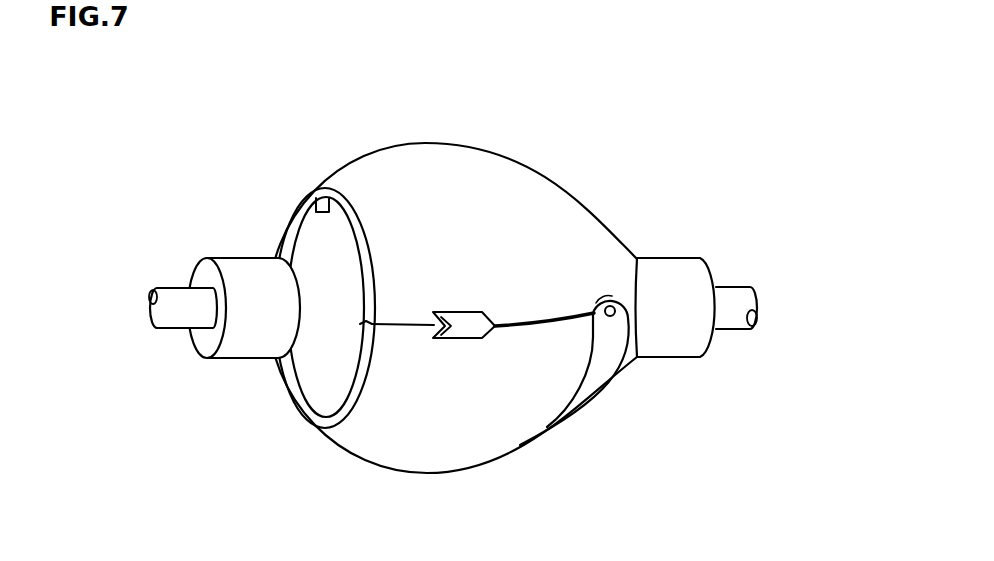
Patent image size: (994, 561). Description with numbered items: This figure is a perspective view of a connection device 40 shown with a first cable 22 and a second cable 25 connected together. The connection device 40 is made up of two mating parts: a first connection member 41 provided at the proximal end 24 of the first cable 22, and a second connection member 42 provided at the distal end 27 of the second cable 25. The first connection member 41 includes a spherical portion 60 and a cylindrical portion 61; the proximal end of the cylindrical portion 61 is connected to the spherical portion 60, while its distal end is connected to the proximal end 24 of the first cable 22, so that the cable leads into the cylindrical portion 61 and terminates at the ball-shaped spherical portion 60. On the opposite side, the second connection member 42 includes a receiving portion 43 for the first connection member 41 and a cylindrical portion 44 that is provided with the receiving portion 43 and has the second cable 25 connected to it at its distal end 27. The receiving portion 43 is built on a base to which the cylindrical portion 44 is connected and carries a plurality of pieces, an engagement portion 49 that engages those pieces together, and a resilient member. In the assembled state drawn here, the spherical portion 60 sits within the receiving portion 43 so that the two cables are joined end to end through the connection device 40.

The connection device 40 is at (273, 73).
The first connection member 41 is at (330, 103).
The second connection member 42 is at (643, 102).
The receiving portion 43 is at (537, 161).
The cylindrical portion 44 is at (668, 276).
The spherical portion 60 is at (312, 242).
The cylindrical portion 61 is at (253, 285).
The first cable 22 is at (147, 321).
The proximal end 24 is at (168, 316).
The second cable 25 is at (764, 320).
The distal end 27 is at (734, 313).
The engagement portion 49 is at (462, 334).